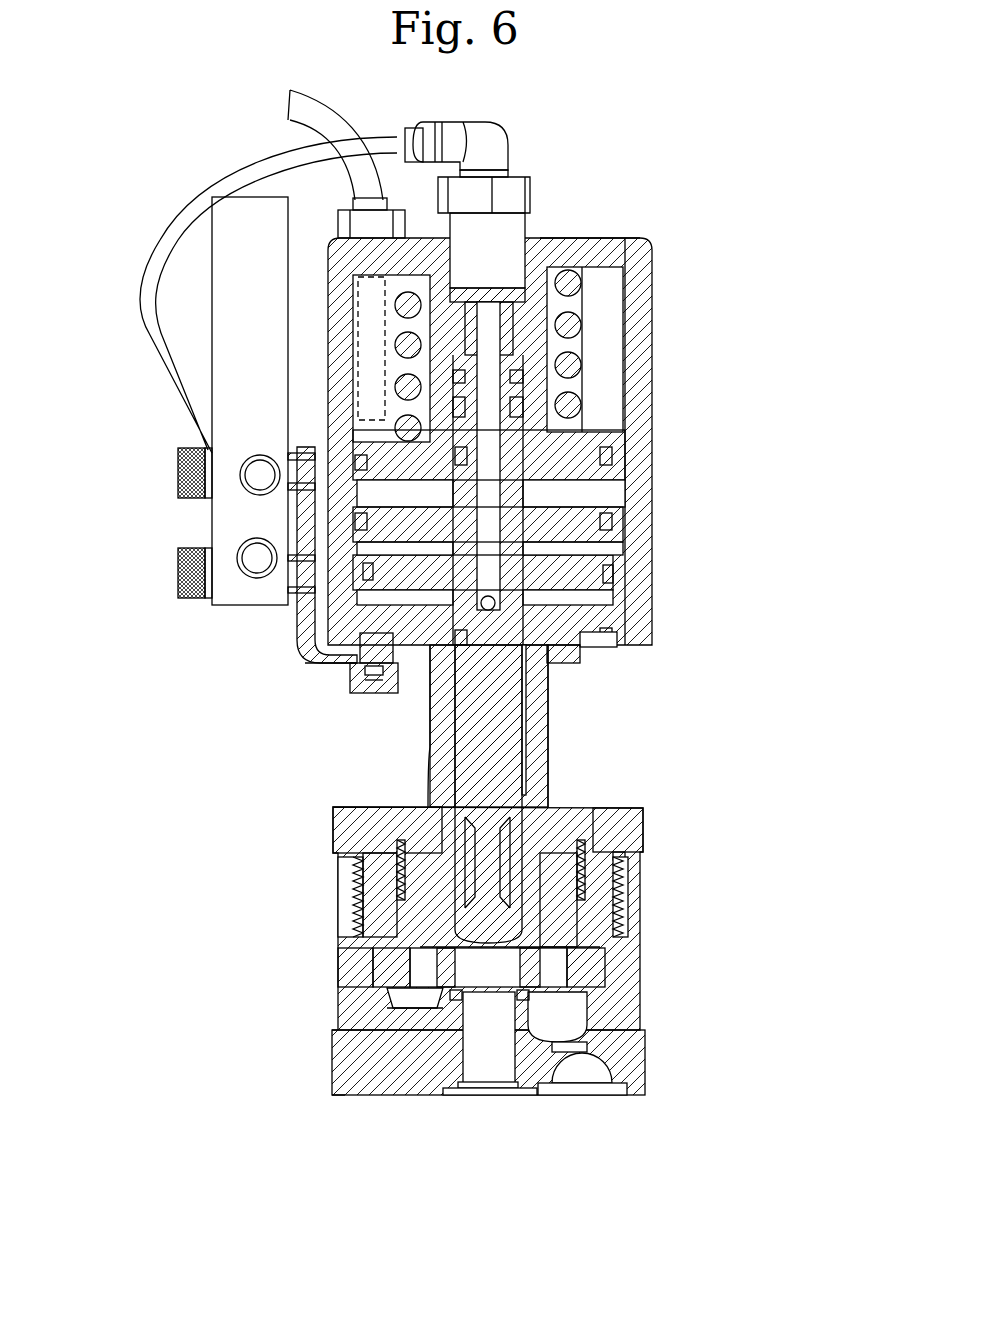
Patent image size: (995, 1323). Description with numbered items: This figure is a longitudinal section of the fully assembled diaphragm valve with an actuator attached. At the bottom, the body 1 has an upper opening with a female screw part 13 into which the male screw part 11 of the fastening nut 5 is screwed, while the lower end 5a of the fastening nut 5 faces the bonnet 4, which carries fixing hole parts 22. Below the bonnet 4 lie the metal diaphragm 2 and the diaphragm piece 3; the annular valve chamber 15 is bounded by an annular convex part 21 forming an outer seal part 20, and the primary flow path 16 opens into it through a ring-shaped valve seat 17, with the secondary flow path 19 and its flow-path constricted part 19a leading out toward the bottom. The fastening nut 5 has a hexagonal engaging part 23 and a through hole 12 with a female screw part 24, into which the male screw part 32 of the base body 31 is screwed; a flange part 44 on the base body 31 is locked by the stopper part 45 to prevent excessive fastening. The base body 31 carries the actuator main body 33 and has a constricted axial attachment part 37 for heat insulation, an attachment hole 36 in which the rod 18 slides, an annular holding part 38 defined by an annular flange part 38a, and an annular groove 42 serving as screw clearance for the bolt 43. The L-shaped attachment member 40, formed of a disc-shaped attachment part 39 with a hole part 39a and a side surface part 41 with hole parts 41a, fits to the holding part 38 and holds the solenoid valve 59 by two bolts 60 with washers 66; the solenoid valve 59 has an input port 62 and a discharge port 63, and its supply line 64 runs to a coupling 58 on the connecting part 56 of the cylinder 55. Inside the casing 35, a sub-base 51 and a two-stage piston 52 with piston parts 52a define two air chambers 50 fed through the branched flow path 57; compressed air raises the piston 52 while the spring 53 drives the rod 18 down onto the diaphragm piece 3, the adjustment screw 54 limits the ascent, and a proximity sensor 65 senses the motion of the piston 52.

The body 1 is at (630, 1057).
The metal diaphragm 2 is at (388, 1004).
The diaphragm piece 3 is at (497, 975).
The bonnet 4 is at (373, 970).
The fastening nut 5 is at (647, 820).
The lower end of the fastening nut 5a is at (372, 962).
The male screw part 11 is at (357, 913).
The through hole 12 is at (583, 923).
The female screw part 13 is at (357, 877).
The valve chamber 15 is at (387, 988).
The primary flow path 16 is at (475, 1060).
The valve seat 17 is at (453, 1000).
The rod 18 is at (577, 820).
The secondary flow path 19 is at (605, 1080).
The flow-path constricted part 19a is at (580, 1047).
The outer seal part 20 is at (602, 992).
The annular convex part 21 is at (382, 986).
The fixing hole parts 22 is at (583, 963).
The engaging part 23 is at (627, 823).
The female screw part 24 is at (617, 867).
The base body 31 is at (595, 827).
The male screw part 32 is at (577, 877).
The actuator main body 33 is at (745, 410).
The casing 35 is at (585, 525).
The attachment hole 36 is at (537, 740).
The axial attachment part 37 is at (440, 733).
The holding part 38 is at (603, 670).
The annular flange part 38a is at (565, 675).
The attachment part 39 is at (358, 652).
The hole part 39a is at (397, 693).
The attachment member 40 is at (310, 662).
The side surface part 41 is at (300, 640).
The hole parts 41a is at (297, 486).
The annular groove 42 is at (600, 655).
The bolt 43 is at (363, 693).
The flange part 44 is at (390, 823).
The stopper part 45 is at (617, 857).
The air chambers 50 is at (563, 467).
The sub-base 51 is at (602, 497).
The piston 52 is at (647, 367).
The piston parts 52a is at (603, 432).
The spring 53 is at (583, 327).
The adjustment screw 54 is at (523, 310).
The cylinder 55 is at (633, 258).
The connecting part 56 is at (507, 263).
The flow path 57 is at (495, 598).
The coupling 58 is at (488, 240).
The solenoid valve 59 is at (213, 520).
The bolts 60 is at (185, 452).
The input port 62 is at (205, 585).
The discharge port 63 is at (205, 485).
The supply line 64 is at (160, 245).
The proximity sensor 65 is at (340, 330).
The washer 66 is at (300, 456).